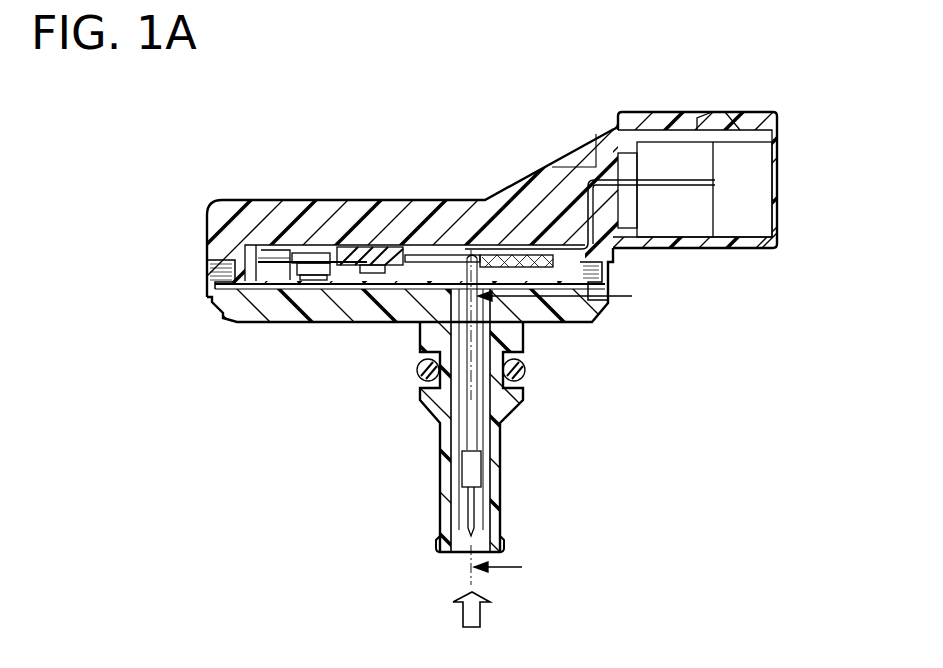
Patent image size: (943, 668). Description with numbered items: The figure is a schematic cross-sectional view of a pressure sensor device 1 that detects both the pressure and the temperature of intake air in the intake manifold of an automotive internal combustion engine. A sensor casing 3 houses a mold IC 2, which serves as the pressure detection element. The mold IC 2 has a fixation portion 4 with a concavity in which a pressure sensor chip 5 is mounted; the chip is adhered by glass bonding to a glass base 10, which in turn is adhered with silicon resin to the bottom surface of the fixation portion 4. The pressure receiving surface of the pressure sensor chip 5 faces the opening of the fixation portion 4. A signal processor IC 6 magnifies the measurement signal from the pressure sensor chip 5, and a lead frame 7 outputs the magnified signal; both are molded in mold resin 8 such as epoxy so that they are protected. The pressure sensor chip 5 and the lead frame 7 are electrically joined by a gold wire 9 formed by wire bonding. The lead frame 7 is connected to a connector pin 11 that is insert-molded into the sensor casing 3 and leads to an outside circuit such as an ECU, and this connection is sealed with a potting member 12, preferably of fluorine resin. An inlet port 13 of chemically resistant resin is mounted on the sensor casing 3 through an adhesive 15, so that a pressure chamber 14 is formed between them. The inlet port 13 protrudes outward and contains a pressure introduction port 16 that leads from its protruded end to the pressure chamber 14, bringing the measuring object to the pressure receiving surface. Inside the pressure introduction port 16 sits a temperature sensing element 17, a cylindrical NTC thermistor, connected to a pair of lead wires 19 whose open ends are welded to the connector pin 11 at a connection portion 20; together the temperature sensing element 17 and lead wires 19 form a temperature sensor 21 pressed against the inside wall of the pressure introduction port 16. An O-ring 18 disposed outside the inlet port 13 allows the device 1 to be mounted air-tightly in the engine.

The pressure sensor device 1 is at (804, 104).
The mold IC 2 is at (355, 215).
The sensor casing 3 is at (545, 205).
The fixation portion 4 is at (297, 270).
The pressure sensor chip 5 is at (330, 275).
The signal processor IC 6 is at (372, 266).
The lead frame 7 is at (400, 245).
The mold resin 8 is at (268, 247).
The wire 9 is at (300, 268).
The base 10 is at (330, 262).
The connector pin 11 is at (588, 245).
The potting member 12 is at (470, 245).
The inlet port 13 is at (430, 398).
The pressure chamber 14 is at (445, 300).
The adhesive 15 is at (207, 270).
The pressure introduction port 16 is at (440, 522).
The temperature sensing element 17 is at (481, 462).
The O-ring 18 is at (527, 375).
The lead wires 19 is at (500, 427).
The connection portion 20 is at (522, 257).
The temperature sensor 21 is at (476, 500).